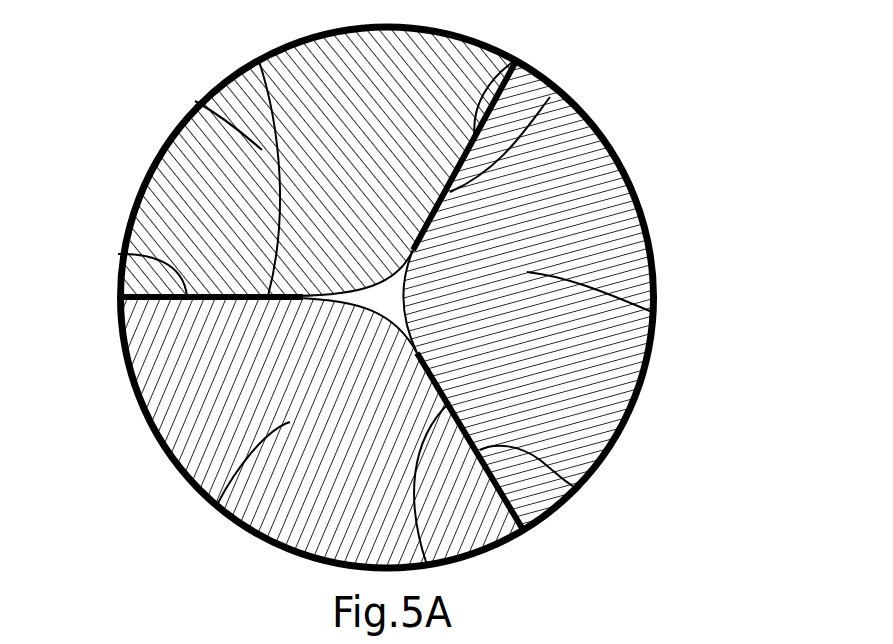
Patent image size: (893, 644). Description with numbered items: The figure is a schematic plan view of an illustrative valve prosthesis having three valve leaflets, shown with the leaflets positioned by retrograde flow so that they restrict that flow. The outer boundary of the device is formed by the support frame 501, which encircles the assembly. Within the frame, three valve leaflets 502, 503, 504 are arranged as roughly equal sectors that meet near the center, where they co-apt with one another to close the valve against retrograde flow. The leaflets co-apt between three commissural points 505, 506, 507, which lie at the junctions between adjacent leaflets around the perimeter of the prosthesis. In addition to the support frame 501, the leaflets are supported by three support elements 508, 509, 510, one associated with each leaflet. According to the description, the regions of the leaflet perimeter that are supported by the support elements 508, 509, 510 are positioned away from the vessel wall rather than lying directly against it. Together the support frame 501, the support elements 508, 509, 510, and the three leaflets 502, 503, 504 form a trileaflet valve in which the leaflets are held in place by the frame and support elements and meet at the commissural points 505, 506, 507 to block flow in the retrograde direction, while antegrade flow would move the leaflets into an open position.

The support frame 501 is at (622, 170).
The valve leaflet 502 is at (195, 101).
The valve leaflet 503 is at (218, 503).
The valve leaflet 504 is at (652, 312).
The commissural point 505 is at (258, 58).
The commissural point 506 is at (550, 97).
The commissural point 507 is at (427, 565).
The support element 508 is at (118, 254).
The support element 509 is at (517, 60).
The support element 510 is at (572, 485).